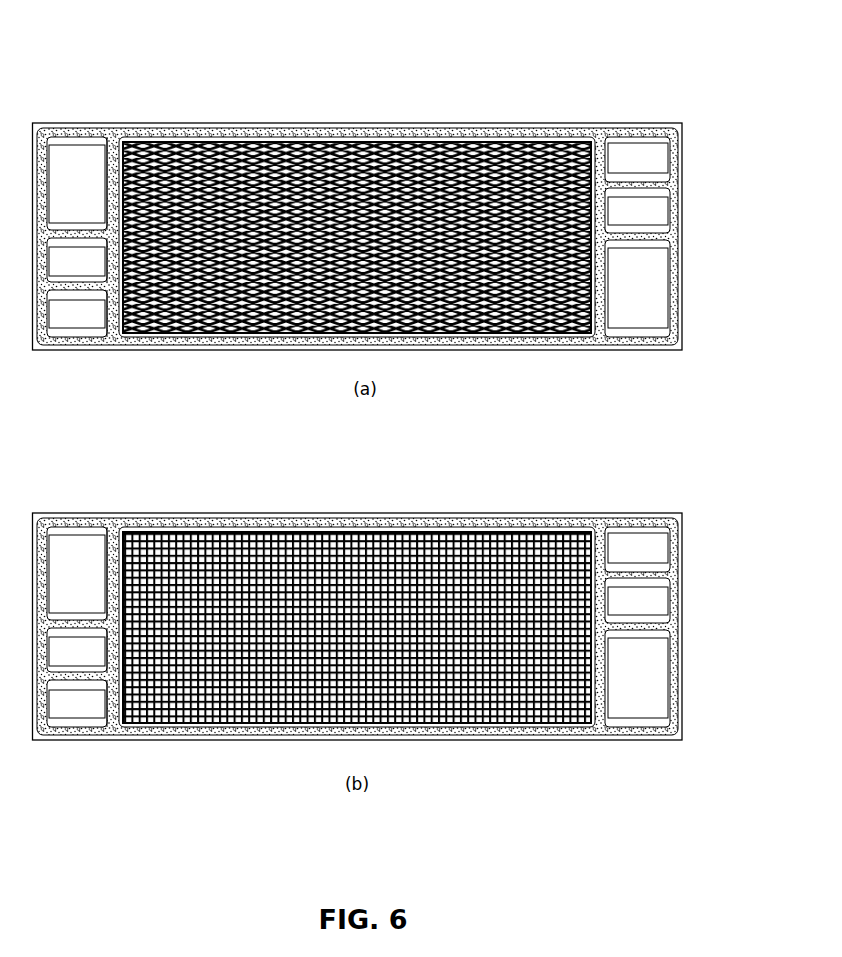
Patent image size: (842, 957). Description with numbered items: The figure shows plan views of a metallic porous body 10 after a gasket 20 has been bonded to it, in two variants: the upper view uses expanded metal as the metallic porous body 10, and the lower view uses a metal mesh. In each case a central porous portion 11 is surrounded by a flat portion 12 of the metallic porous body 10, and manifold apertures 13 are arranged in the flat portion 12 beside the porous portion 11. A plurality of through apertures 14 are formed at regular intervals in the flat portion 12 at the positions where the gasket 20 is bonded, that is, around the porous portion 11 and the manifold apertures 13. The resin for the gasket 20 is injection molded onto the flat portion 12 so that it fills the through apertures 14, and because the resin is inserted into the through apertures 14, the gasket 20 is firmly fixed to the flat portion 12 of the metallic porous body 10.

The metallic porous body 10 is at (687, 174).
The porous portion 11 is at (488, 146).
The flat portion 12 is at (347, 128).
The manifold apertures 13 is at (645, 329).
The through apertures 14 is at (149, 128).
The gasket 20 is at (636, 130).